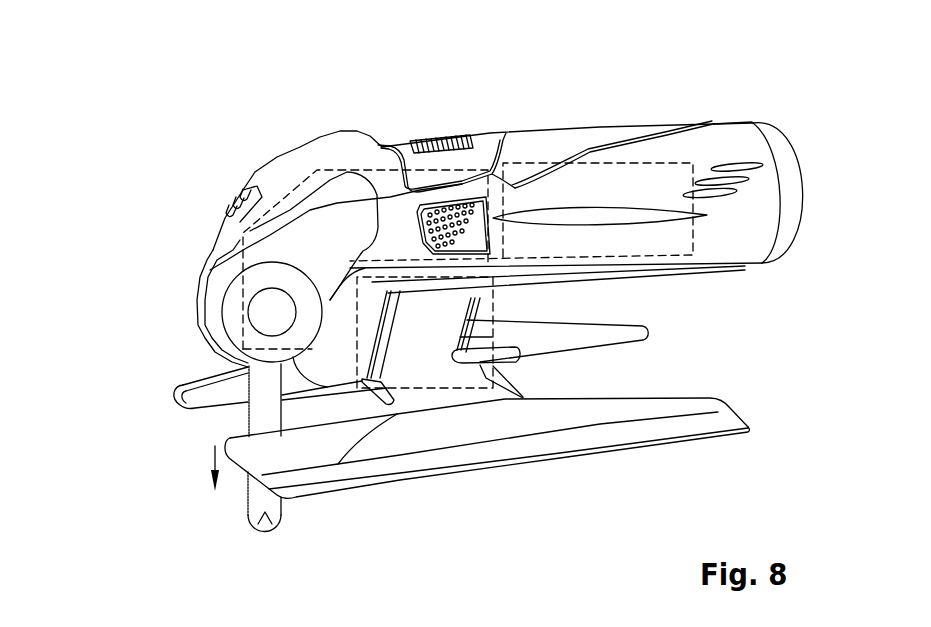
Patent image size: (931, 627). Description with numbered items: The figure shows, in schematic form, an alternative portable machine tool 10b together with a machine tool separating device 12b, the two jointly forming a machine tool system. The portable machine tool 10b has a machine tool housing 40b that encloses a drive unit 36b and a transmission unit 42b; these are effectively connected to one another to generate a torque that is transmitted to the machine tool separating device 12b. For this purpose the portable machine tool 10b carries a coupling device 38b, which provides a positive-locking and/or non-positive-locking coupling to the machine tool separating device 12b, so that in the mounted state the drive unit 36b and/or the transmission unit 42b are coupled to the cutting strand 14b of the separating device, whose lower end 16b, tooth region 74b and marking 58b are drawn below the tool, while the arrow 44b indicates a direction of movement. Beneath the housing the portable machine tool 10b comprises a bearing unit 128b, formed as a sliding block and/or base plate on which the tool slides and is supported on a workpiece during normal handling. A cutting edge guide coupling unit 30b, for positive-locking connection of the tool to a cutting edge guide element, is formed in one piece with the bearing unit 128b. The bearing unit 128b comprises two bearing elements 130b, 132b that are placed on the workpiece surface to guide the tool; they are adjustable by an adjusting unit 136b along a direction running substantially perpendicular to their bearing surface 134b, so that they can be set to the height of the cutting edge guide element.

The portable machine tool 10b is at (722, 102).
The machine tool separating device 12b is at (183, 426).
The cutting strand 14b is at (247, 500).
The saw blade tip 16b is at (285, 508).
The cutting edge guide coupling unit 30b is at (432, 514).
The drive unit 36b is at (625, 127).
The coupling device 38b is at (158, 312).
The machine tool housing 40b is at (290, 166).
The transmission unit 42b is at (354, 170).
The cutting direction arrow 44b is at (213, 463).
The blade tip marking 58b is at (265, 522).
The blade cutting edge end 74b is at (249, 515).
The bearing unit 128b is at (530, 453).
The bearing element 130b is at (720, 418).
The bearing element 132b is at (632, 336).
The bearing surface 134b is at (667, 448).
The adjusting unit 136b is at (496, 308).